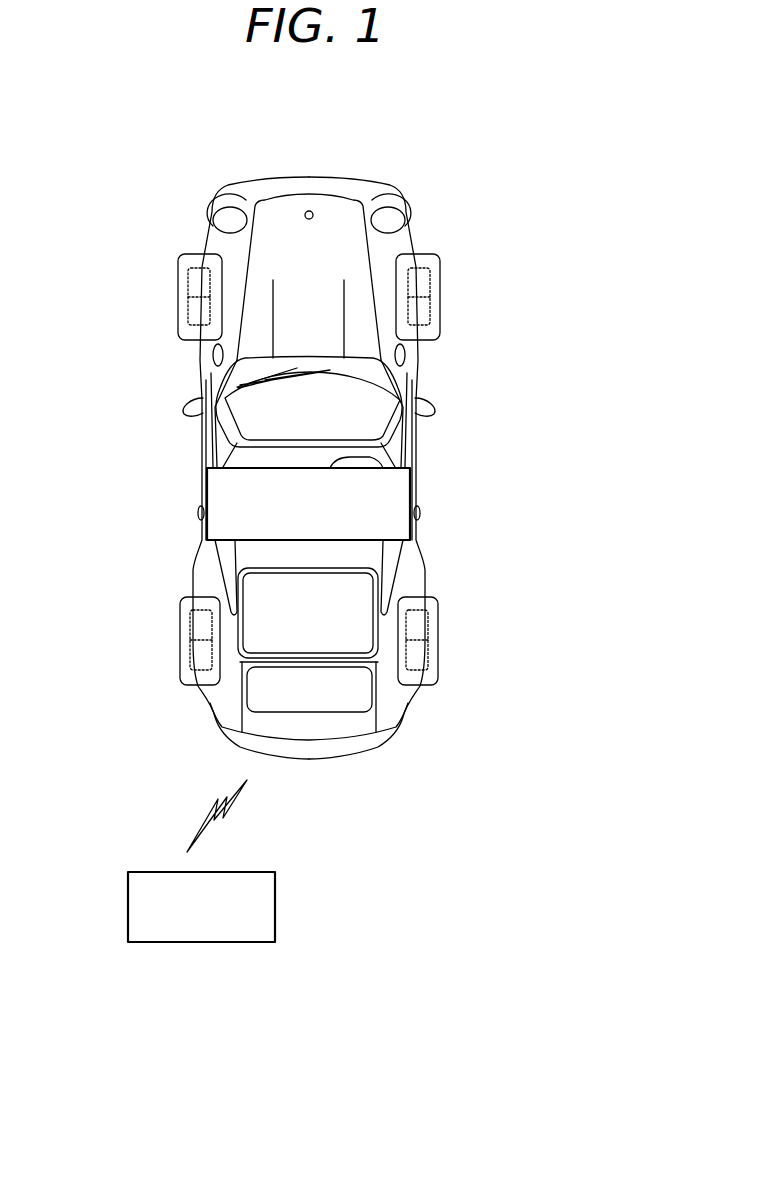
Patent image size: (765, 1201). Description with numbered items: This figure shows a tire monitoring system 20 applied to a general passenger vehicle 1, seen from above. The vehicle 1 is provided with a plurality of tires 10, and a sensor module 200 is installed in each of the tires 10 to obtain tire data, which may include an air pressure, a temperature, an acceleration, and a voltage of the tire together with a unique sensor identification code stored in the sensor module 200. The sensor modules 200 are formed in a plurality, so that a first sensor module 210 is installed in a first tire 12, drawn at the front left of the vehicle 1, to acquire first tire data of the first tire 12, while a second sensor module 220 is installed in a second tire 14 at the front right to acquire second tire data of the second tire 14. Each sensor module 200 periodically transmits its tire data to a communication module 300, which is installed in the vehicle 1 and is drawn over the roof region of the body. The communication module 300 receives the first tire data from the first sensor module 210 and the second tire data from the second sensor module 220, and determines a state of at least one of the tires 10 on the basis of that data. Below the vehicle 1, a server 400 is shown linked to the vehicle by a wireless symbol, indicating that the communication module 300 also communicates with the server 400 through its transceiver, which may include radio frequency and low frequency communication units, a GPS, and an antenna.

The tire monitoring system 20 is at (309, 437).
The vehicle 1 is at (384, 213).
The tires 10 is at (309, 450).
The first tire 12 is at (190, 254).
The second tire 14 is at (452, 236).
The sensor module 200 is at (309, 476).
The first sensor module 210 is at (190, 318).
The second sensor module 220 is at (430, 318).
The communication module 300 is at (414, 463).
The server 400 is at (200, 944).